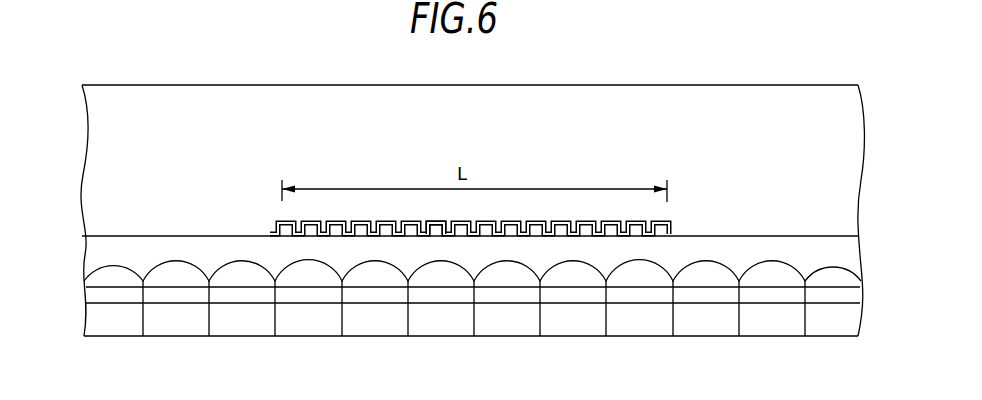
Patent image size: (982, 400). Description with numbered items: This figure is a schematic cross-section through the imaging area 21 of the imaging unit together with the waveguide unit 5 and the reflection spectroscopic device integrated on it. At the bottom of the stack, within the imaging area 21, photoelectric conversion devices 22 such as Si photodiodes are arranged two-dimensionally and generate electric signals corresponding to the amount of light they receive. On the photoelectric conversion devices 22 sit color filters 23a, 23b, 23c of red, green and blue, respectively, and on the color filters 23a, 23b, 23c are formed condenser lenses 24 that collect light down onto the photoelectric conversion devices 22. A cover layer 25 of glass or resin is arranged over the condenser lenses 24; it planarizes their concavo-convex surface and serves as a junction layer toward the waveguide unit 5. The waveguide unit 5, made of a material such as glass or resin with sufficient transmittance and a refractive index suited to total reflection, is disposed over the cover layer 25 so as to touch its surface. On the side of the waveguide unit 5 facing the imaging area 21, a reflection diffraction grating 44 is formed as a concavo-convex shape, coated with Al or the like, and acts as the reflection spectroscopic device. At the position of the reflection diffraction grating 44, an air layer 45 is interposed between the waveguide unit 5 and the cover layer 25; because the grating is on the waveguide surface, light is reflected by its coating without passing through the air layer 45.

The waveguide unit 5 is at (575, 84).
The imaging area 21 is at (714, 361).
The photoelectric conversion devices 22 is at (239, 328).
The color filter 23a is at (495, 305).
The color filter 23b is at (560, 305).
The color filter 23c is at (625, 305).
The condenser lenses 24 is at (356, 280).
The cover layer 25 is at (83, 255).
The reflection diffraction grating 44 is at (668, 233).
The air layer 45 is at (437, 236).